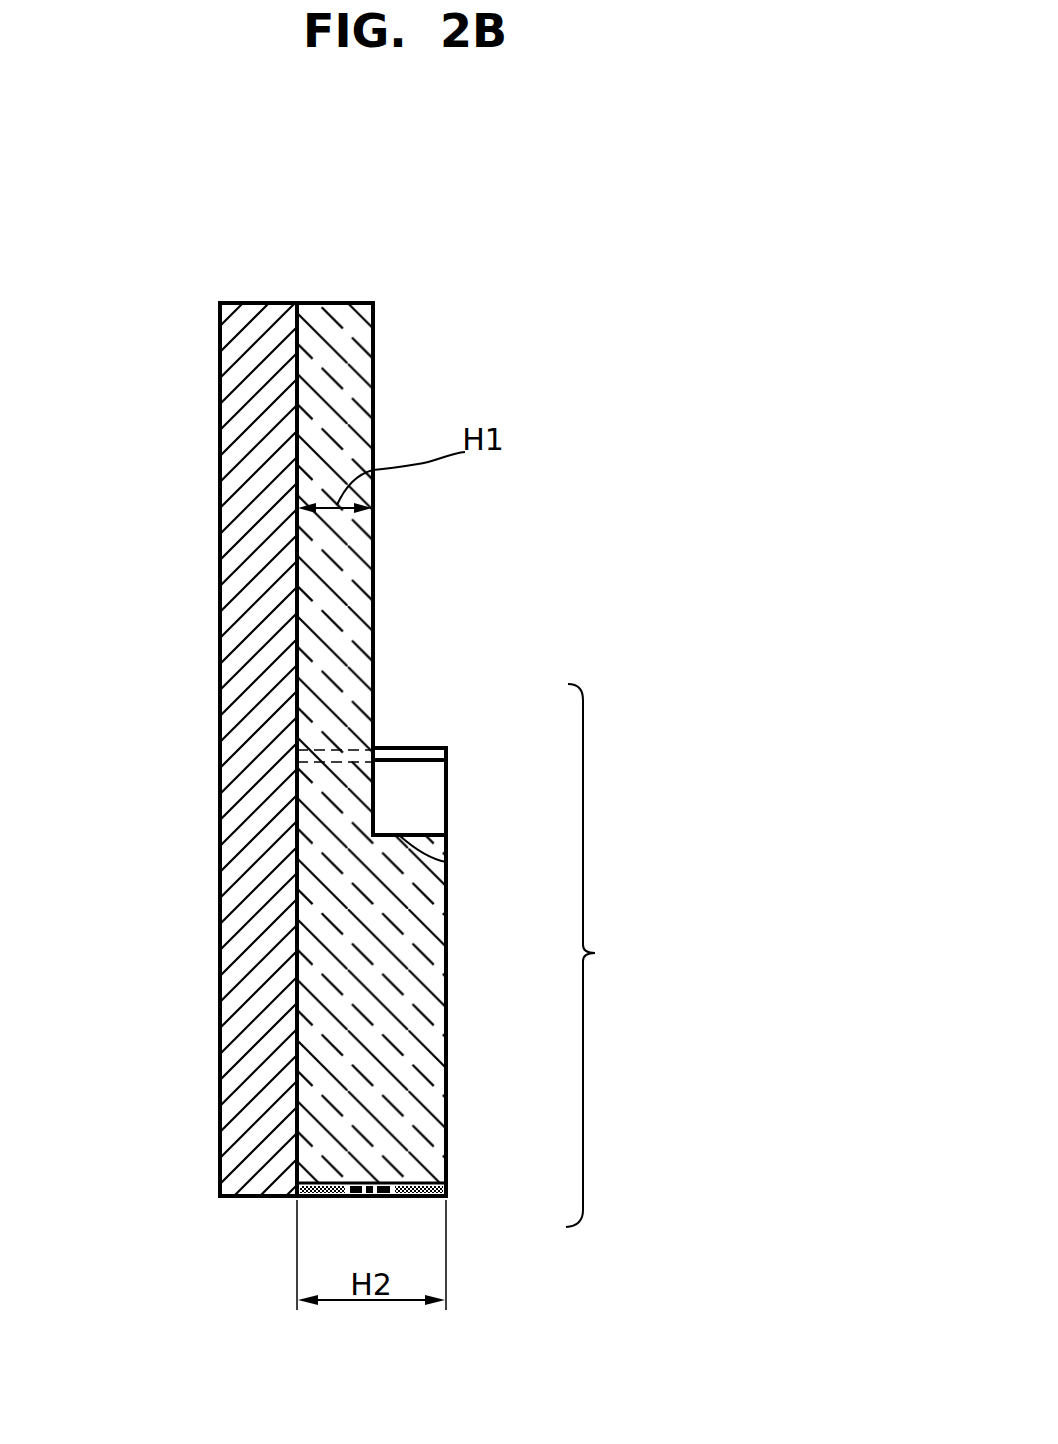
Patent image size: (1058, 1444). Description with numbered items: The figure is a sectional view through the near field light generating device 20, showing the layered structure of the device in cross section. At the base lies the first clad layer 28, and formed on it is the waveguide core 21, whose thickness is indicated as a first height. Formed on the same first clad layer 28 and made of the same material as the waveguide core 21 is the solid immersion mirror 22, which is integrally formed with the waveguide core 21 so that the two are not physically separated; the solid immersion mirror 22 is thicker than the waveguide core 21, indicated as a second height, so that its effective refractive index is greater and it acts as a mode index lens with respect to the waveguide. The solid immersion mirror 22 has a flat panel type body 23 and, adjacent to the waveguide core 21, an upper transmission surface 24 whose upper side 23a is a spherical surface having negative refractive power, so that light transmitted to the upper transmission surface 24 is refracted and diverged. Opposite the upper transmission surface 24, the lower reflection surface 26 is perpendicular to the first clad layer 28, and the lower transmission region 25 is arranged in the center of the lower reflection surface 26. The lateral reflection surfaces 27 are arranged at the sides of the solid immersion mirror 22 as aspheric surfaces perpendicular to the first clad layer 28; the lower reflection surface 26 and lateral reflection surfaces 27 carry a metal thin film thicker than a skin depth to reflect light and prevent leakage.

The near field light generating device 20 is at (640, 281).
The waveguide core 21 is at (363, 610).
The solid immersion mirror 22 is at (603, 955).
The flat panel type body 23 is at (437, 945).
The upper side of the upper transmission surface 23a is at (446, 862).
The upper transmission surface 24 is at (373, 803).
The lower transmission region 25 is at (377, 1197).
The lower reflection surface 26 is at (427, 1184).
The lateral reflection surfaces 27 is at (447, 748).
The first clad layer 28 is at (232, 641).